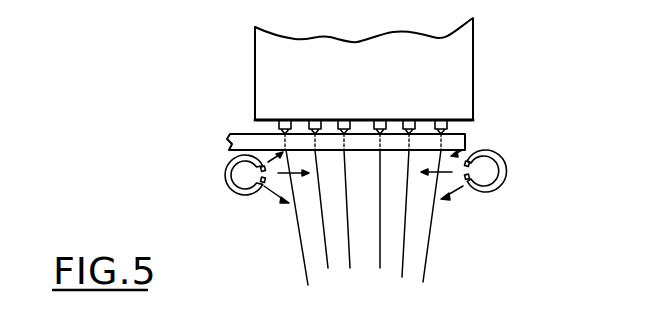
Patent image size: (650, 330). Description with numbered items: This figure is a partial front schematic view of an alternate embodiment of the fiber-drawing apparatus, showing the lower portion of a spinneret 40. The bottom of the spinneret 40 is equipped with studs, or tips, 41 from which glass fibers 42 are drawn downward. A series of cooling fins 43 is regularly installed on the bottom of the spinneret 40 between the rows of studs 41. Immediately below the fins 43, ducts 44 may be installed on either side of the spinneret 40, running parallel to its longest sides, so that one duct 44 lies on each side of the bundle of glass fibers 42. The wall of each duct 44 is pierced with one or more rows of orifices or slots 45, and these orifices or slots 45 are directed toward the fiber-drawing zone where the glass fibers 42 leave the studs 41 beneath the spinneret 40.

The spinneret 40 is at (255, 75).
The studs 41 is at (410, 121).
The glass fibers 42 is at (347, 237).
The cooling fins 43 is at (236, 134).
The ducts 44 is at (226, 178).
The orifices or slots 45 is at (263, 192).